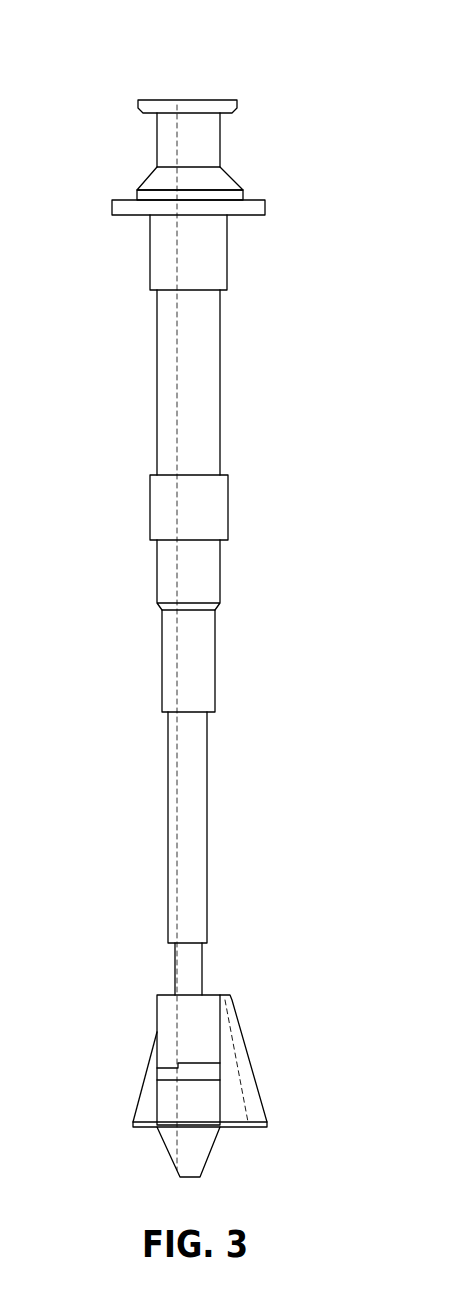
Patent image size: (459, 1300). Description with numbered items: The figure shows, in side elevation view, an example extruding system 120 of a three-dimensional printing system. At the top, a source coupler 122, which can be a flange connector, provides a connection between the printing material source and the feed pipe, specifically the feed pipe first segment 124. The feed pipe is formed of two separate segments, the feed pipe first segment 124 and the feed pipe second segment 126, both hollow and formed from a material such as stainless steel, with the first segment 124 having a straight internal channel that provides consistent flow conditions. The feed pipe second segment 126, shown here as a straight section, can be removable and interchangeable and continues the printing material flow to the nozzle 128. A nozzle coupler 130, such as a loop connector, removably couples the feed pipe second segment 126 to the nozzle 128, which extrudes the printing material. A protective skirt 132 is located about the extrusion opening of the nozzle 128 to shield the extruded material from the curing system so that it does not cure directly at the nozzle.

The extruding system 120 is at (80, 114).
The source coupler 122 is at (224, 180).
The feed pipe first segment 124 is at (203, 655).
The feed pipe second segment 126 is at (197, 825).
The nozzle 128 is at (193, 1022).
The nozzle coupler 130 is at (200, 1072).
The protective skirt 132 is at (262, 1107).